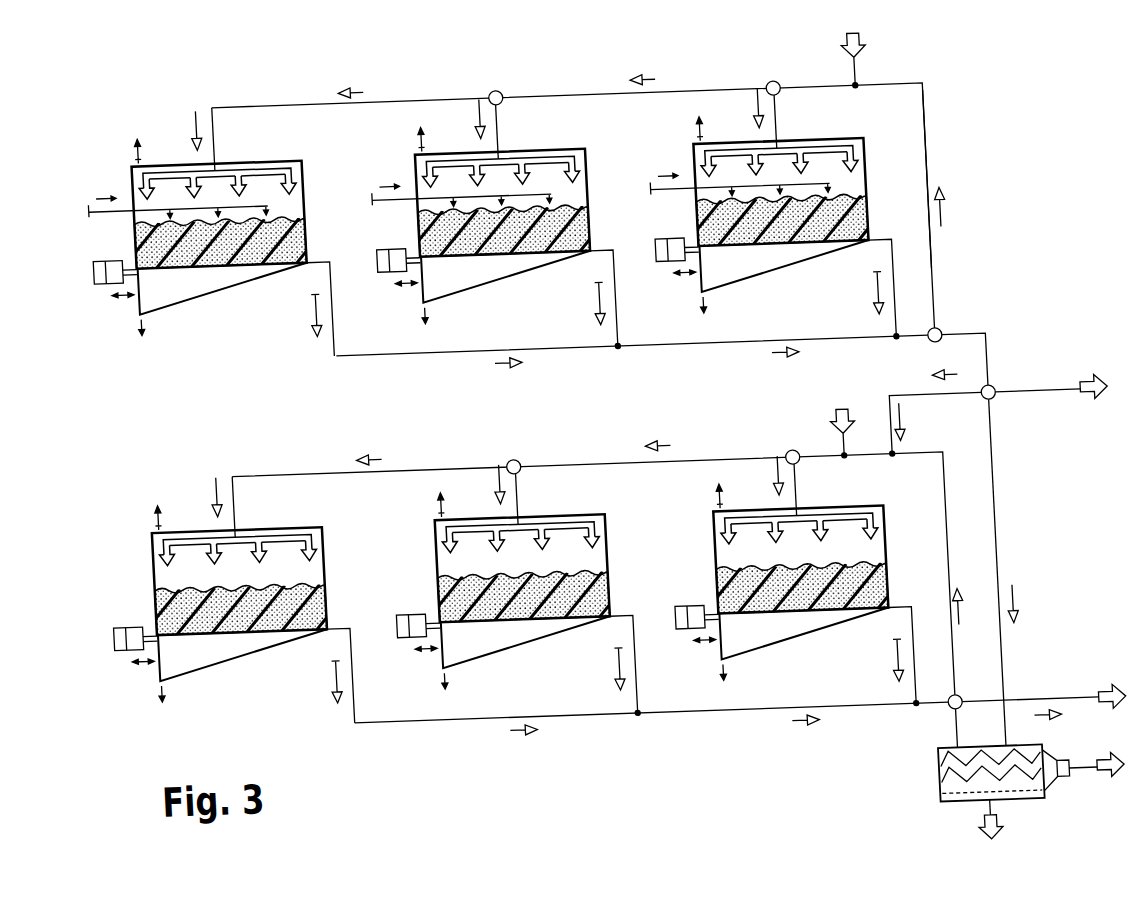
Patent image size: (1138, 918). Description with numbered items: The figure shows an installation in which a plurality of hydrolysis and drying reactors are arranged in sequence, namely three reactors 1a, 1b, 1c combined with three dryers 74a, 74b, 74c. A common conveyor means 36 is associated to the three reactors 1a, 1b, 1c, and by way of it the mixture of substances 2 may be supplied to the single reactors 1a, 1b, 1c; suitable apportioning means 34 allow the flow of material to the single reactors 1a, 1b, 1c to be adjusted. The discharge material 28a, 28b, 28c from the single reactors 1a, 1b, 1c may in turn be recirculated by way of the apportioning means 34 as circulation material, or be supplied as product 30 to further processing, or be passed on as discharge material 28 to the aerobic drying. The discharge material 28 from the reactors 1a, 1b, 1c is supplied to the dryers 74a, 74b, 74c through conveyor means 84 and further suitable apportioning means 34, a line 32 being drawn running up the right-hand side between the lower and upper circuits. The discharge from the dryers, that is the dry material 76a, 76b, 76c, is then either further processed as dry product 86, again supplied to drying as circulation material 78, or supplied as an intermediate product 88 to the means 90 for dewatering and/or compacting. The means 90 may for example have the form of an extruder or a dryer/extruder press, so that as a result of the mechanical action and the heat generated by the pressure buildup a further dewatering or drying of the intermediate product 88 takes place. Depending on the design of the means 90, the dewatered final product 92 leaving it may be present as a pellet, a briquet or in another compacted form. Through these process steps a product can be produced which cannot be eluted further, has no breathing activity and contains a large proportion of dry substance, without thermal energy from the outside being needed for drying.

The reactor 1a is at (296, 200).
The reactor 1b is at (580, 198).
The reactor 1c is at (858, 197).
The mixture of substances 2 is at (859, 67).
The discharge material 28 is at (927, 407).
The discharge material 28a is at (297, 314).
The discharge material 28b is at (581, 312).
The discharge material 28c is at (860, 311).
The product 30 is at (1067, 415).
The return line 32 is at (934, 248).
The apportioning means 34 is at (486, 110).
The conveyor means 36 is at (217, 116).
The dryer 74a is at (297, 572).
The dryer 74b is at (580, 571).
The dryer 74c is at (858, 600).
The dry material 76a is at (299, 680).
The dry material 76b is at (582, 681).
The dry material 76c is at (861, 679).
The circulation material 78 is at (981, 631).
The conveyor means 84 is at (536, 486).
The dry product 86 is at (1070, 720).
The intermediate product 88 is at (912, 765).
The means for dewatering and/or compacting 90 is at (896, 813).
The dewatered final product 92 is at (940, 860).